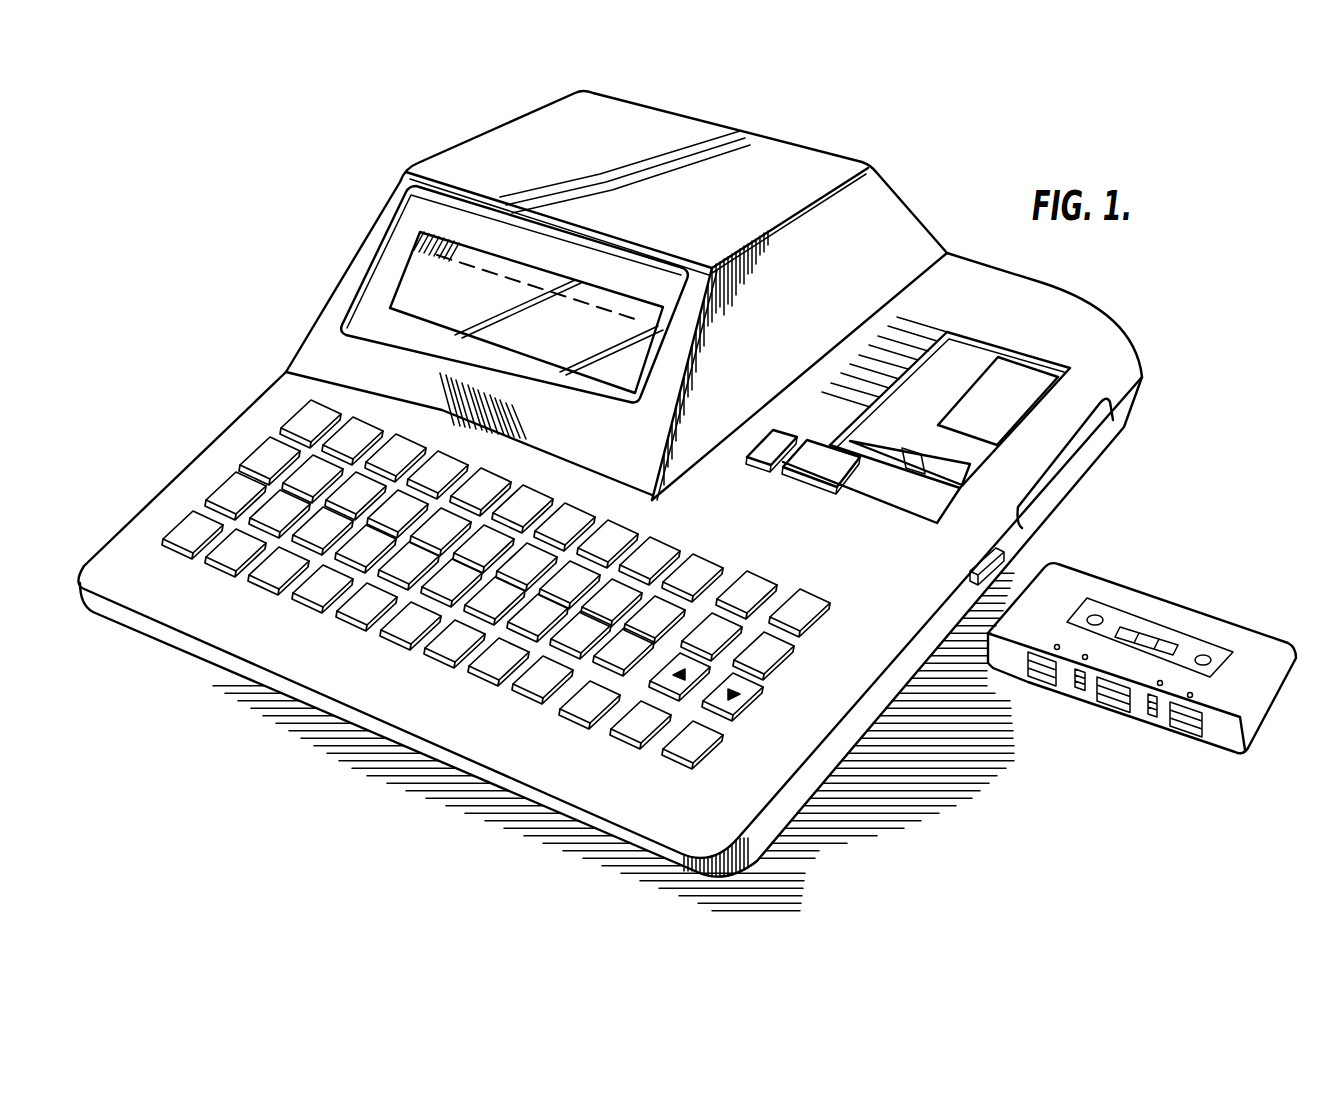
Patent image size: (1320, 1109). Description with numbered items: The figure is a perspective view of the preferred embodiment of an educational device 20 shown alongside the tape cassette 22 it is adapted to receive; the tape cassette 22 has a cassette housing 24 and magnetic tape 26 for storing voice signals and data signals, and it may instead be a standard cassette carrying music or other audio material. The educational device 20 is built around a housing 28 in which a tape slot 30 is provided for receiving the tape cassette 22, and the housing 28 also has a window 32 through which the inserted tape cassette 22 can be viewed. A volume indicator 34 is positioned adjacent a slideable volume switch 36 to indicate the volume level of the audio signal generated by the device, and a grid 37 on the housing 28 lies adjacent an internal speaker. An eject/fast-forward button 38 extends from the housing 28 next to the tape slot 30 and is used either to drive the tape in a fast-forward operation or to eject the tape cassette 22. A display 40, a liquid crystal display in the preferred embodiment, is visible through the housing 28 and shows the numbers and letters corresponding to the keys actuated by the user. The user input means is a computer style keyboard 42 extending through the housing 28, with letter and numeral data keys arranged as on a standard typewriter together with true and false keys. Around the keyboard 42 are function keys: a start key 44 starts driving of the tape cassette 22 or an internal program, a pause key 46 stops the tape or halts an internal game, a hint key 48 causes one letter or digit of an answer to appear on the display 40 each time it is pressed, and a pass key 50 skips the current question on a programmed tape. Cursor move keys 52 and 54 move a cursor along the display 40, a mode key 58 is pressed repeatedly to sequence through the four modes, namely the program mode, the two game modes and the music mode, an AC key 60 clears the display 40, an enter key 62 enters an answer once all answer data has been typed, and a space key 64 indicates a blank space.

The educational device 20 is at (1155, 278).
The tape cassette 22 is at (1198, 582).
The cassette housing 24 is at (1272, 635).
The magnetic tape 26 is at (1113, 700).
The housing 28 is at (958, 253).
The tape slot 30 is at (1105, 423).
The window 32 is at (1033, 377).
The volume indicator 34 is at (912, 454).
The slideable volume switch 36 is at (800, 481).
The grid 37 is at (903, 350).
The eject/fast-forward button 38 is at (1000, 560).
The display 40 is at (407, 283).
The computer style keyboard 42 is at (161, 409).
The start key 44 is at (817, 597).
The pause key 46 is at (752, 570).
The hint key 48 is at (750, 624).
The pass key 50 is at (790, 662).
The cursor move key 52 is at (690, 713).
The cursor move key 54 is at (760, 698).
The mode key 58 is at (607, 733).
The AC key 60 is at (663, 757).
The enter key 62 is at (573, 718).
The space key 64 is at (212, 567).